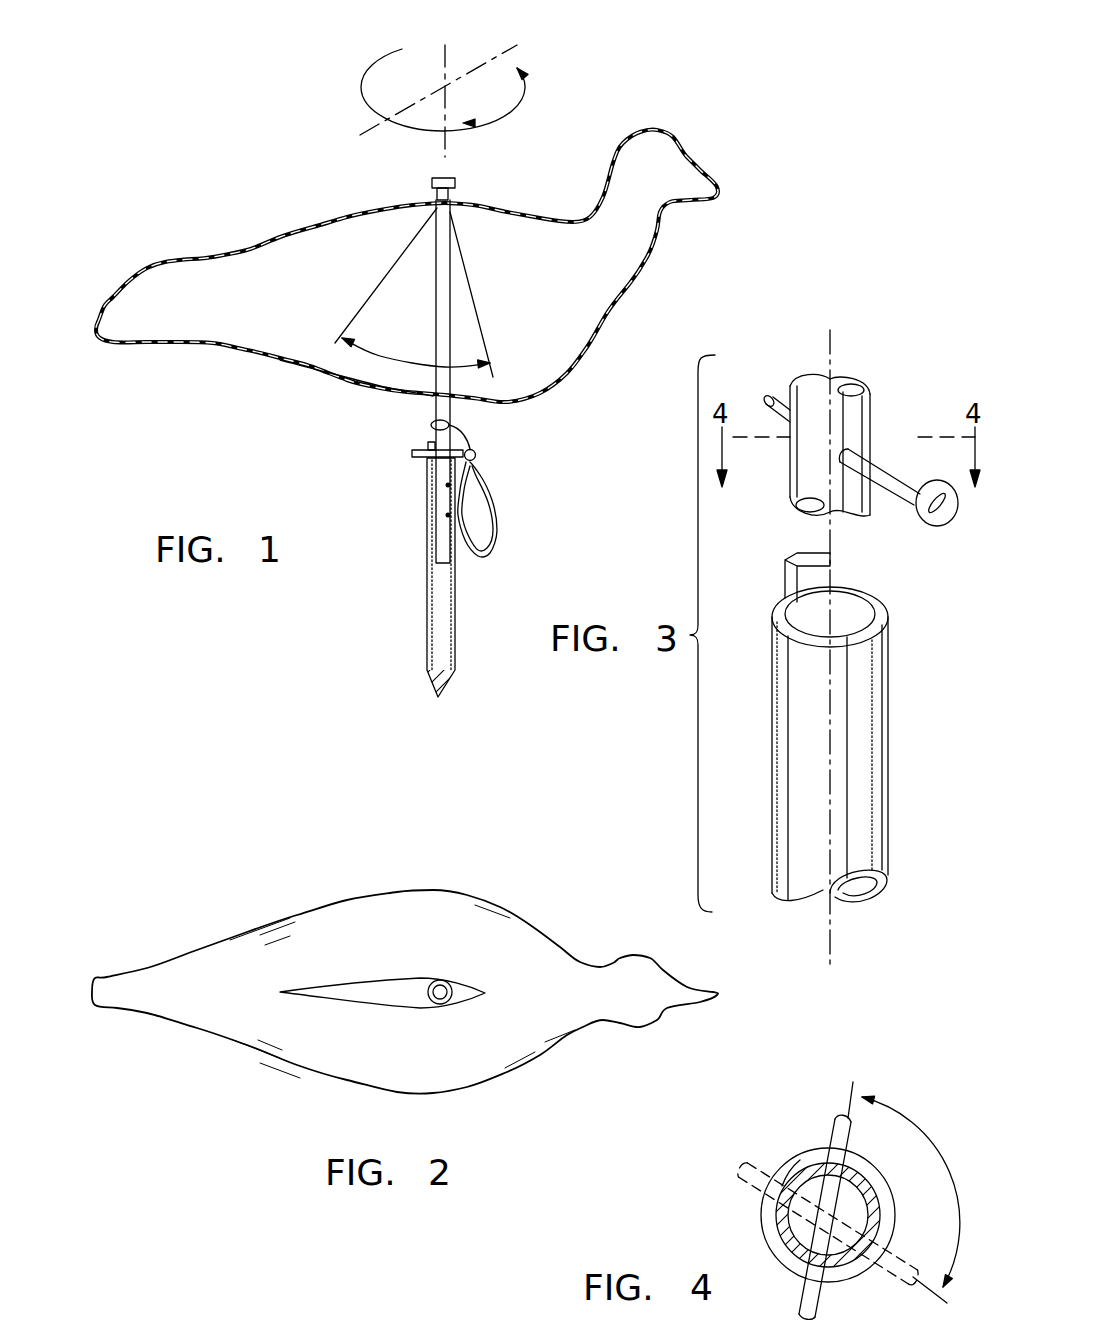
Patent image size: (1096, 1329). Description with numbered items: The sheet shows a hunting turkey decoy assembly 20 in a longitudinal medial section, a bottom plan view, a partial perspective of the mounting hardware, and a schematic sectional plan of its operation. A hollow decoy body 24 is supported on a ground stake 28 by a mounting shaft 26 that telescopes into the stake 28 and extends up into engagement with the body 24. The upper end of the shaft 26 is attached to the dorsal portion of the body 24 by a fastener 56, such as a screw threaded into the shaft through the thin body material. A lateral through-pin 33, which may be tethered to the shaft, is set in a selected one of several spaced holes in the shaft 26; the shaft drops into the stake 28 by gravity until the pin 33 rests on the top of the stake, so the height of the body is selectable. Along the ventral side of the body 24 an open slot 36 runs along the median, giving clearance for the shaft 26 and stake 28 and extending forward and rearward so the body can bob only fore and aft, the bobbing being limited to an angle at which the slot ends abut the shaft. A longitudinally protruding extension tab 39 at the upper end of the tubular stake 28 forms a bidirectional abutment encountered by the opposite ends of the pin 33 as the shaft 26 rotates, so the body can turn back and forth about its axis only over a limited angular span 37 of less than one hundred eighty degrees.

In FIG. 1, the decoy assembly 20 is at (290, 440).
In FIG. 1, the decoy body 24 is at (610, 313).
In FIG. 2, the decoy body 24 is at (538, 1055).
In FIG. 1, the mounting shaft 26 is at (440, 316).
In FIG. 3, the mounting shaft 26 is at (870, 400).
In FIG. 4, the mounting shaft 26 is at (870, 1210).
In FIG. 1, the ground stake 28 is at (430, 600).
In FIG. 2, the ground stake 28 is at (445, 1004).
In FIG. 3, the ground stake 28 is at (880, 795).
In FIG. 4, the ground stake 28 is at (875, 1183).
In FIG. 1, the pin 33 is at (415, 458).
In FIG. 3, the pin 33 is at (890, 475).
In FIG. 4, the pin 33 is at (835, 1130).
In FIG. 2, the slot 36 is at (347, 997).
In FIG. 1, the angular span 37 is at (520, 100).
In FIG. 4, the angular span 37 is at (948, 1165).
In FIG. 3, the extension tab 39 is at (812, 572).
In FIG. 4, the extension tab 39 is at (800, 1165).
In FIG. 1, the fastener 56 is at (447, 178).